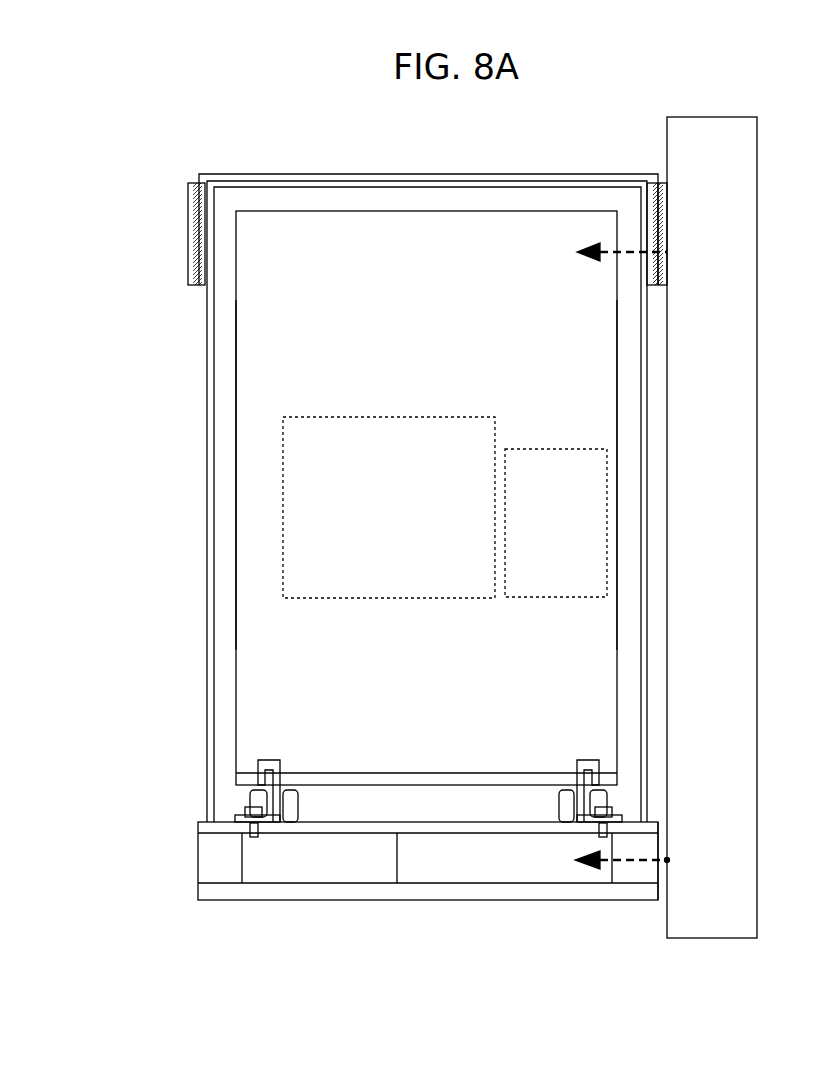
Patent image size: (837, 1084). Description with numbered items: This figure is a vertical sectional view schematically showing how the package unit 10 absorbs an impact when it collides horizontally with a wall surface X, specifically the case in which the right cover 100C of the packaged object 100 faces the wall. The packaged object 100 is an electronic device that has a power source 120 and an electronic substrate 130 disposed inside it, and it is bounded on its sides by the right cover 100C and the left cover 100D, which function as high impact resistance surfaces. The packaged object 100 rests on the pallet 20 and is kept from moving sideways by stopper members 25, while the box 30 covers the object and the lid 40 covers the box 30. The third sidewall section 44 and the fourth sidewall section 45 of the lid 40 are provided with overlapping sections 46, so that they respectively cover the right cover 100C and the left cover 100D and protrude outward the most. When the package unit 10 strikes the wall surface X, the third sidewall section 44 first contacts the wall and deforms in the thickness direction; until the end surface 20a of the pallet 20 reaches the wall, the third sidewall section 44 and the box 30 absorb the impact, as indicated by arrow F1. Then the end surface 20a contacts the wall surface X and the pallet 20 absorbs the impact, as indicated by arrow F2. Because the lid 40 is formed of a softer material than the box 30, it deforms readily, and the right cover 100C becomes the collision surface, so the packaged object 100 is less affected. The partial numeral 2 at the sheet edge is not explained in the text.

The wall surface X is at (666, 150).
The lid 40 is at (248, 174).
The box 30 is at (205, 417).
The overlapping section 46 is at (192, 232).
The fourth sidewall section 45 is at (190, 257).
The third sidewall section 44 is at (648, 240).
The packaged object 100 is at (294, 249).
The left cover 100D is at (235, 473).
The right cover 100C is at (619, 358).
The power source 120 is at (413, 515).
The electronic substrate 130 is at (576, 520).
The arrow F1 is at (617, 268).
The arrow F2 is at (604, 863).
The stopper member 25 is at (277, 776).
The pallet 20 is at (197, 857).
The end surface 20a is at (690, 866).
The package unit 10 is at (826, 430).
The display system 2 is at (831, 775).